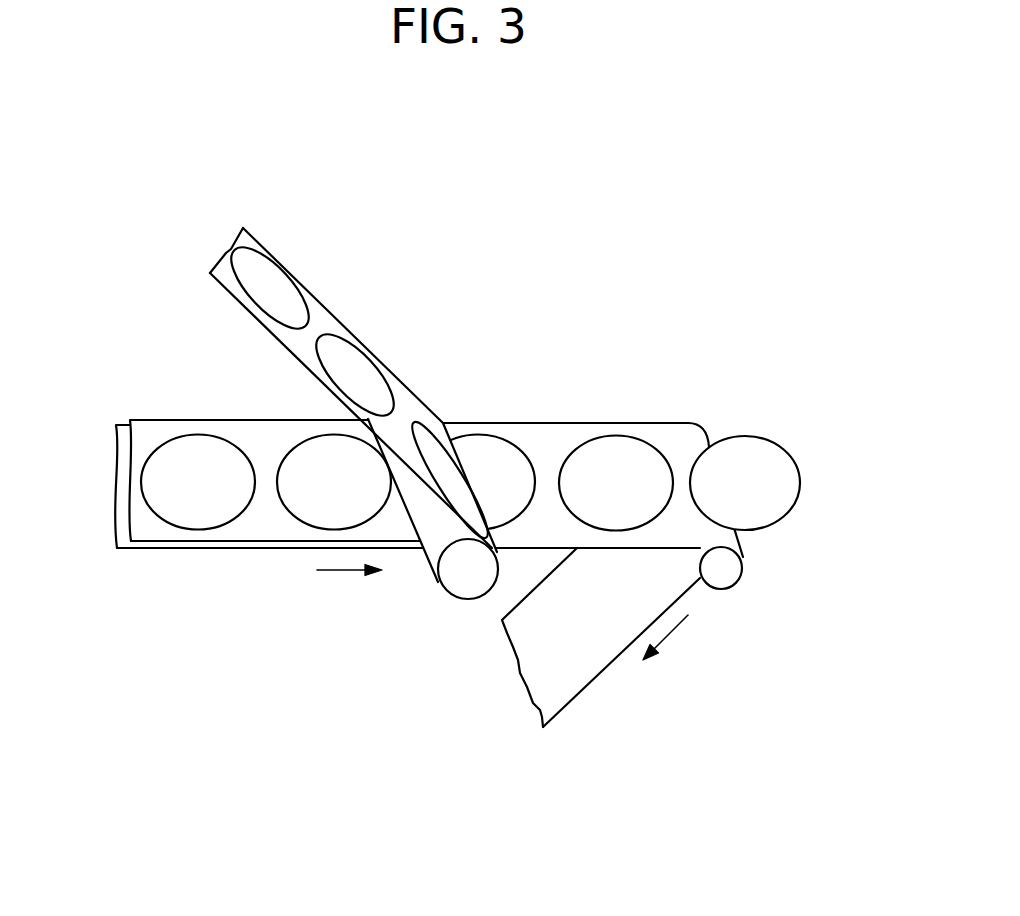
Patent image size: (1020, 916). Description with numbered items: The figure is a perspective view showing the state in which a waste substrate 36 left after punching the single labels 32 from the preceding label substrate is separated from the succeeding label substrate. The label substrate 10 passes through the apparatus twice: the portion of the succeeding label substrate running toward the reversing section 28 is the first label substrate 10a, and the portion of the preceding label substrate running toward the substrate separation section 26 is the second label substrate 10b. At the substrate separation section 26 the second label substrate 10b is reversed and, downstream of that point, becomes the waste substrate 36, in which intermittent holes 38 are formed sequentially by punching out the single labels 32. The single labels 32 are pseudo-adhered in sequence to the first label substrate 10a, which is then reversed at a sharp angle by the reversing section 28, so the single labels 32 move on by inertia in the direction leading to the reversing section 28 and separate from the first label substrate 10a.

The label substrate 10 is at (568, 627).
The first label substrate 10a is at (122, 517).
The second label substrate 10b is at (150, 433).
The substrate separation section 26 is at (468, 572).
The reversing section 28 is at (721, 567).
The single labels 32 is at (333, 480).
The waste substrate 36 is at (408, 390).
The holes 38 is at (358, 377).